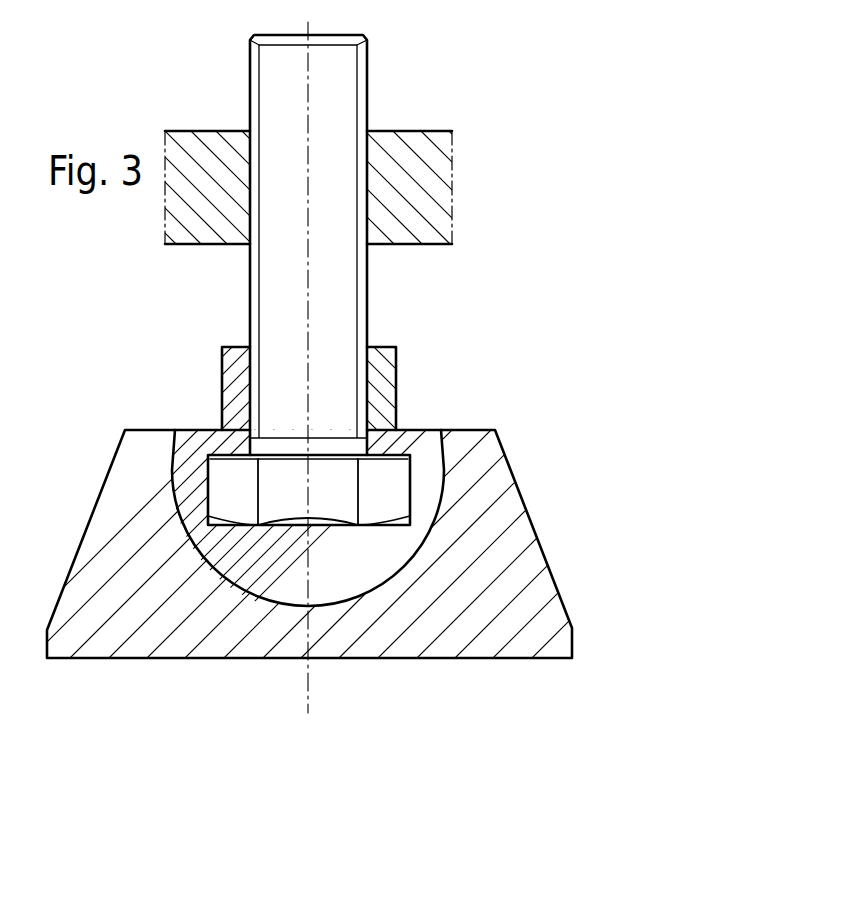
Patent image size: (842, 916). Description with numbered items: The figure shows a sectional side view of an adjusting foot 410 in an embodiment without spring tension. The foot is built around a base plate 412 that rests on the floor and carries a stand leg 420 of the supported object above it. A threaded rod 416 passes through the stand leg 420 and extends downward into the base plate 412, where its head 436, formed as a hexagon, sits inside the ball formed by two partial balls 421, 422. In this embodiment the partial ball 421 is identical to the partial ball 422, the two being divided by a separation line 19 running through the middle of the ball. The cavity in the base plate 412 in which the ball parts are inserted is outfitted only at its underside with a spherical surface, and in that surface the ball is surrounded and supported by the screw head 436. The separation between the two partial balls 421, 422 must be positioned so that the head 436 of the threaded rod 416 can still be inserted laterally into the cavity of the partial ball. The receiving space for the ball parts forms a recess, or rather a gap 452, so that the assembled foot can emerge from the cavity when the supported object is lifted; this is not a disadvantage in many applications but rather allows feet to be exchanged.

The adjusting foot 410 is at (588, 219).
The base plate 412 is at (513, 515).
The threaded rod 416 is at (368, 272).
The stand leg 420 is at (417, 143).
The partial ball 421 is at (228, 383).
The partial ball 422 is at (395, 377).
The head of threaded rod 436 is at (385, 505).
The gap 452 is at (437, 452).
The separation line 19 is at (312, 572).